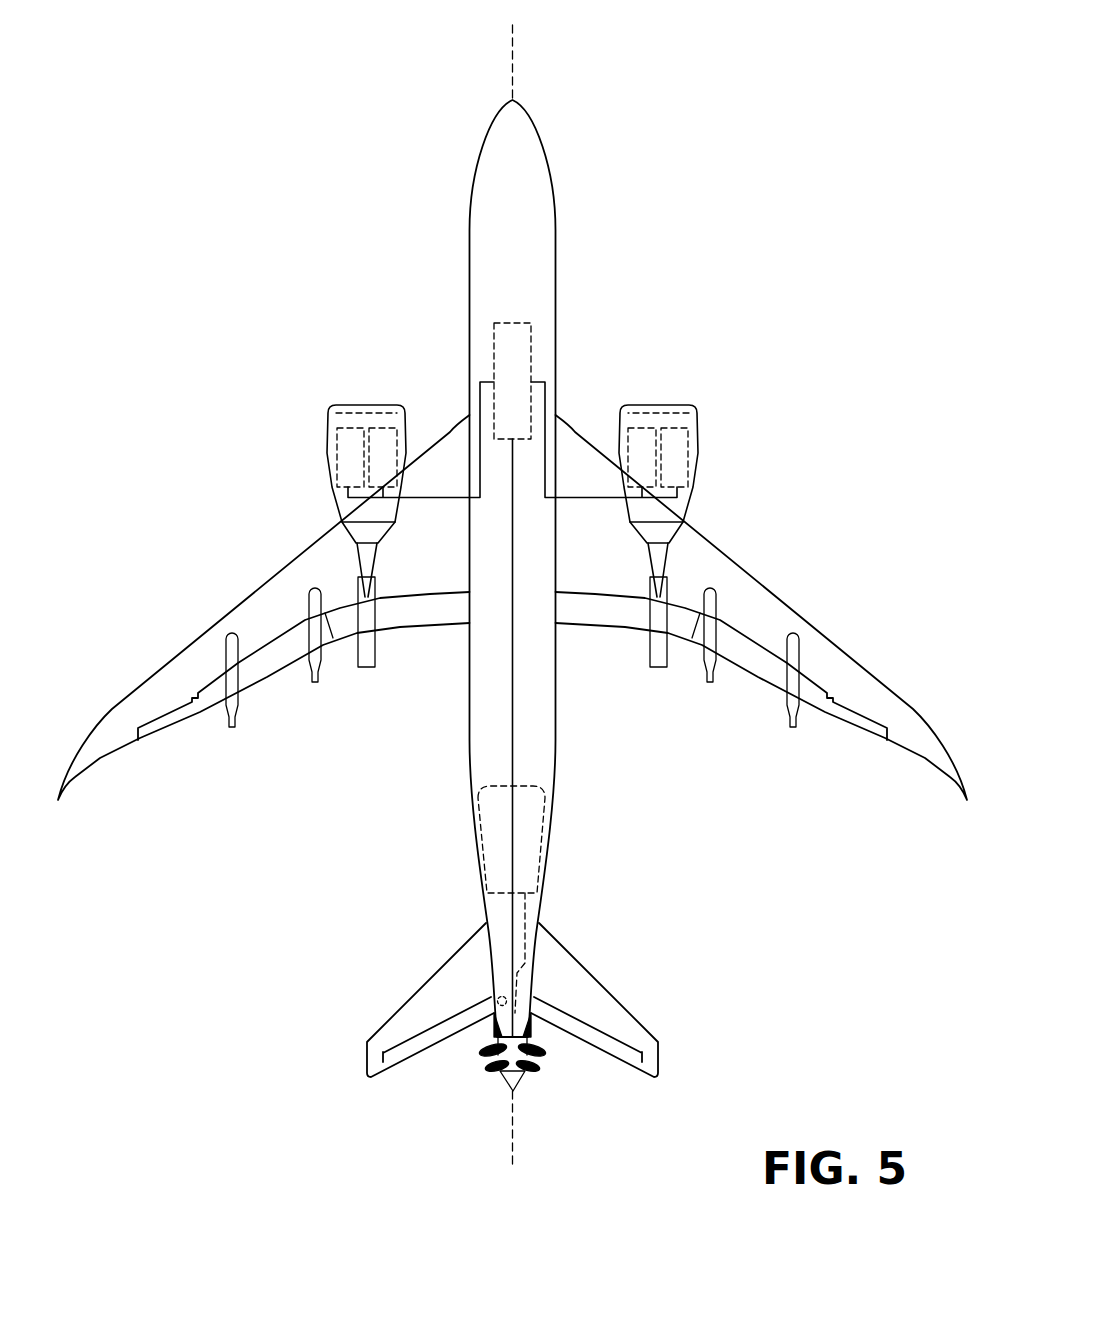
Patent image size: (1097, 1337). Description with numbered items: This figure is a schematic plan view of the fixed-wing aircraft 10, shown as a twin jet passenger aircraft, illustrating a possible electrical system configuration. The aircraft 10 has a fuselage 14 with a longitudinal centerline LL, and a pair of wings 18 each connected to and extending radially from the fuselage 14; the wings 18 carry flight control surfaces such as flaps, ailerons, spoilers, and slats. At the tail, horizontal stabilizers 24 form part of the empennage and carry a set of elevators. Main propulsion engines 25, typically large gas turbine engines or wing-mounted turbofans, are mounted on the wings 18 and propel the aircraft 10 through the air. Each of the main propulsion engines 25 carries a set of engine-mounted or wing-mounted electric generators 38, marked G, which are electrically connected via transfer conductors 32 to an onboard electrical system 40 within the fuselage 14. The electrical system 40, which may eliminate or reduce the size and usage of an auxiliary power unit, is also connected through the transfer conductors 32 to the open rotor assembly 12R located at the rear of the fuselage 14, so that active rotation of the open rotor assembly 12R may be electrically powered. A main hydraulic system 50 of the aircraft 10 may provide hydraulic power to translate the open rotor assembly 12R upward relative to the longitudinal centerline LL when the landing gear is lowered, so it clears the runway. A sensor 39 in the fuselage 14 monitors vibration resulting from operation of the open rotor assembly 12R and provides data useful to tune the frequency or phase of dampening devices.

The fixed-wing aircraft 10 is at (803, 73).
The longitudinal centerline LL is at (515, 80).
The fuselage 14 is at (556, 265).
The wings 18 is at (281, 634).
The horizontal stabilizers 24 is at (438, 968).
The main propulsion engines 25 is at (362, 405).
The transfer conductors 32 is at (413, 498).
The electric generators 38 is at (333, 452).
The onboard electrical system 40 is at (527, 388).
The main hydraulic system 50 is at (526, 786).
The sensor 39 is at (498, 1005).
The open rotor assembly 12R is at (533, 1093).